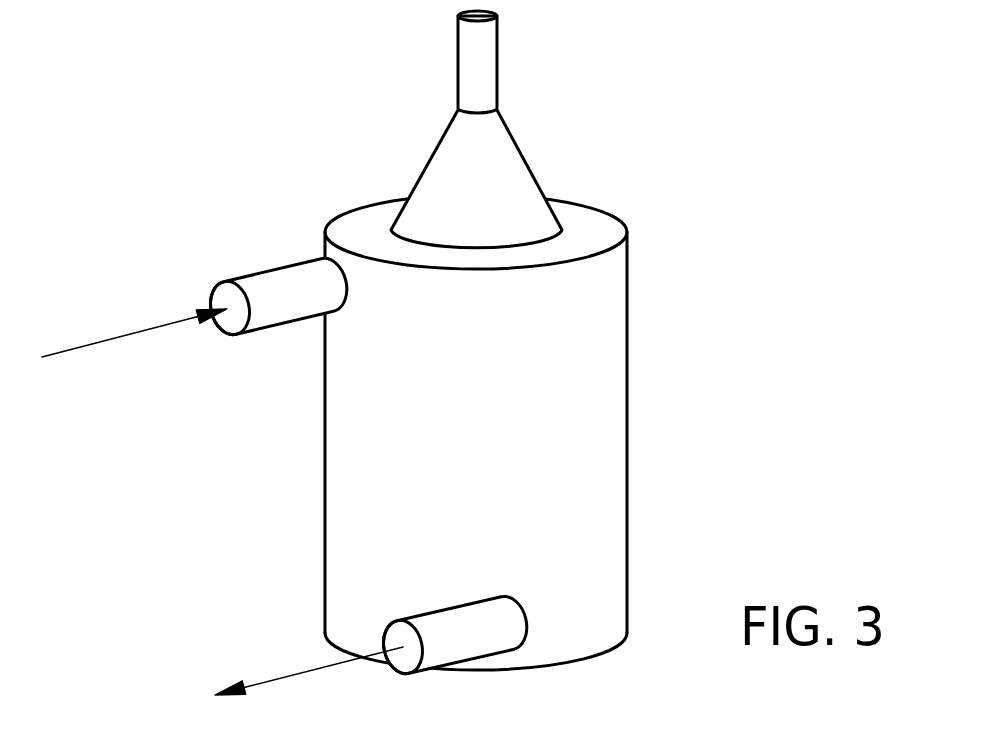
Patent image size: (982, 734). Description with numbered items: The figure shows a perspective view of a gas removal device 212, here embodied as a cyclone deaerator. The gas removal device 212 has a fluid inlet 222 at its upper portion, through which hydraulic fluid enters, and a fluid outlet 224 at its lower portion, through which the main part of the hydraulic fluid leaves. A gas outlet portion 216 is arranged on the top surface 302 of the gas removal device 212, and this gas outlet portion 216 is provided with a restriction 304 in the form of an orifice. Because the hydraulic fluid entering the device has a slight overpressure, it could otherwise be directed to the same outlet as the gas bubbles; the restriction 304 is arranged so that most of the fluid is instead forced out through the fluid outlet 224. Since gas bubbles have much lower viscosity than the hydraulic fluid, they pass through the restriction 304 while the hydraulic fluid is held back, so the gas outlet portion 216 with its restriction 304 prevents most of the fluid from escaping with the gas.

The gas removal device 212 is at (690, 356).
The top surface 302 is at (602, 230).
The restriction 304 is at (457, 87).
The gas outlet portion 216 is at (497, 55).
The fluid inlet 222 is at (223, 293).
The fluid outlet 224 is at (397, 638).